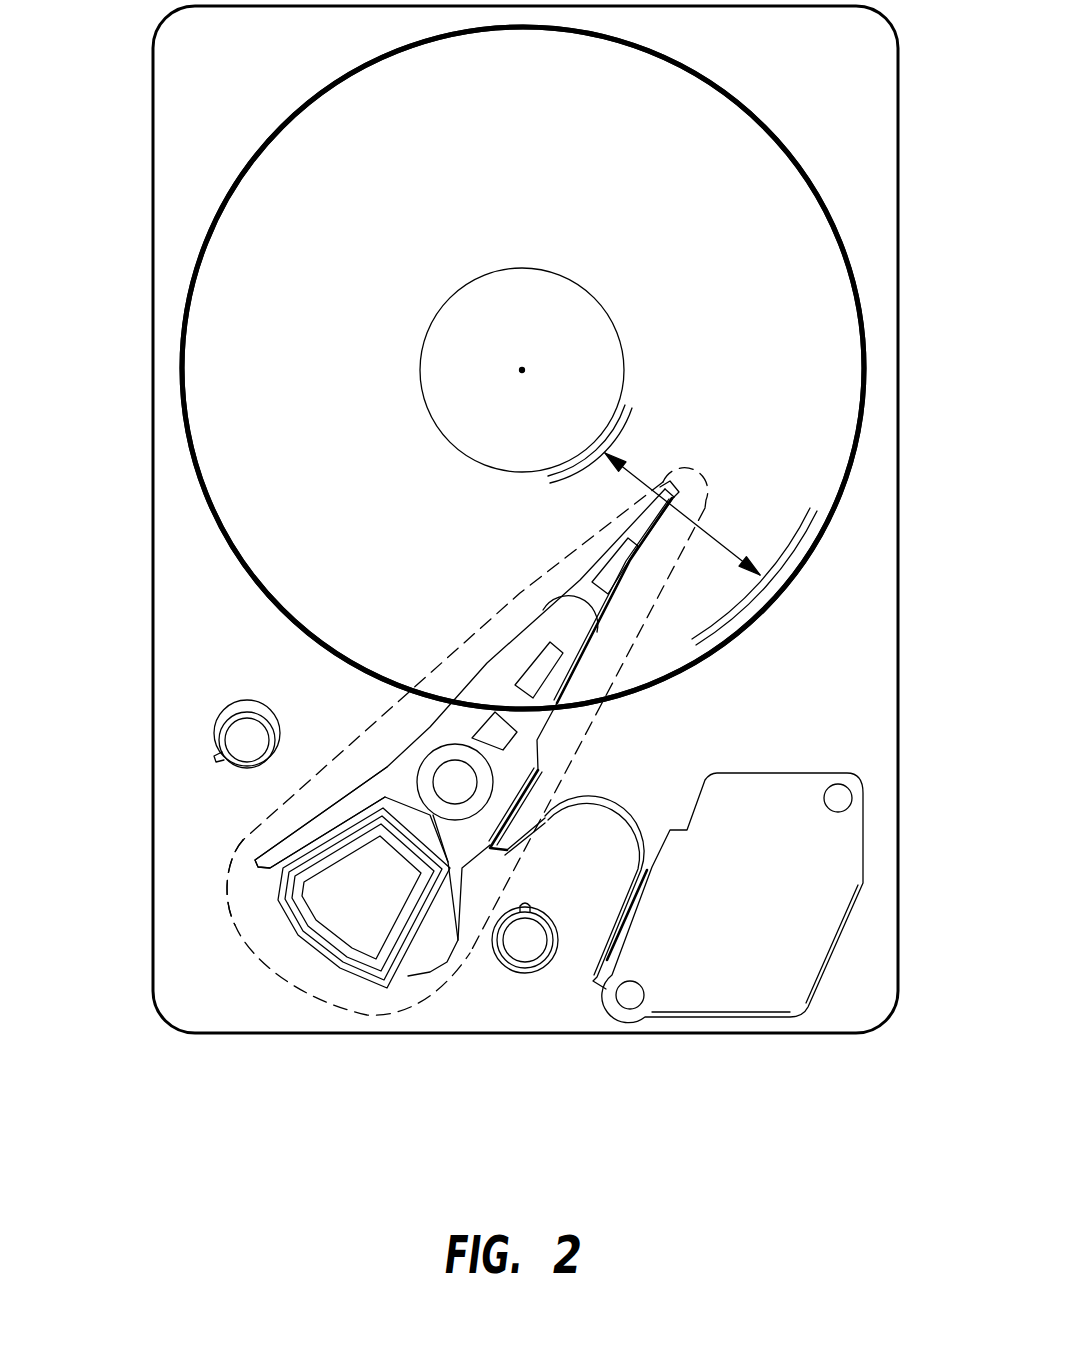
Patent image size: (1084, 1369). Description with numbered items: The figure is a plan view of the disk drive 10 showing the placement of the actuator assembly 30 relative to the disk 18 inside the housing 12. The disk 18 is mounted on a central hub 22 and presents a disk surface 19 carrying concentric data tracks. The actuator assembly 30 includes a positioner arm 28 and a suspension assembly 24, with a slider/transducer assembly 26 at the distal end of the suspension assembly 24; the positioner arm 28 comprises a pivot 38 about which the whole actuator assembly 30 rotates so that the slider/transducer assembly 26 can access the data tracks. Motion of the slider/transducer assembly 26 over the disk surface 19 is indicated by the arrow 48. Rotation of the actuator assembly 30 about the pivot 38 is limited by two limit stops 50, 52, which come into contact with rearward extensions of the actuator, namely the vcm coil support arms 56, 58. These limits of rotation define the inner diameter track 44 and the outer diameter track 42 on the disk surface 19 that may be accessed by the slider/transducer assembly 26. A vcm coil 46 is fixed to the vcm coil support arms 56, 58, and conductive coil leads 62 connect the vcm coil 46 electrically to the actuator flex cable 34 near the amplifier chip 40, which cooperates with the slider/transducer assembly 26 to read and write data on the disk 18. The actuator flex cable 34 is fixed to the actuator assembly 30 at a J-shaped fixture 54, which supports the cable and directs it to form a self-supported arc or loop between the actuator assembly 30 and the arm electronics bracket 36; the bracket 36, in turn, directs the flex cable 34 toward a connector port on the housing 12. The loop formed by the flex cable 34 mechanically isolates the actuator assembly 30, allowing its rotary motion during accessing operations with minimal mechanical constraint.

The disk drive 10 is at (672, 1086).
The housing 12 is at (900, 197).
The disk 18 is at (767, 127).
The disk surface 19 is at (215, 322).
The spindle hub 22 is at (622, 338).
The suspension assembly 24 is at (633, 533).
The slider/transducer assembly 26 is at (688, 478).
The positioner arm 28 is at (482, 703).
The actuator assembly 30 is at (325, 1003).
The actuator flex cable 34 is at (630, 807).
The arm electronics (AE) bracket 36 is at (753, 1002).
The pivot 38 is at (455, 782).
The amplifier chip 40 is at (553, 787).
The outer diameter (OD) track 42 is at (797, 540).
The inner diameter (ID) track 44 is at (627, 417).
The vcm coil 46 is at (298, 937).
The arrow 48 is at (717, 523).
The limit stop 50 is at (523, 975).
The limit stop 52 is at (247, 708).
The J-shaped fixture (J-block) 54 is at (508, 853).
The vcm coil support arm 56 is at (430, 972).
The vcm coil support arm 58 is at (243, 845).
The conductive coil leads 62 is at (385, 797).